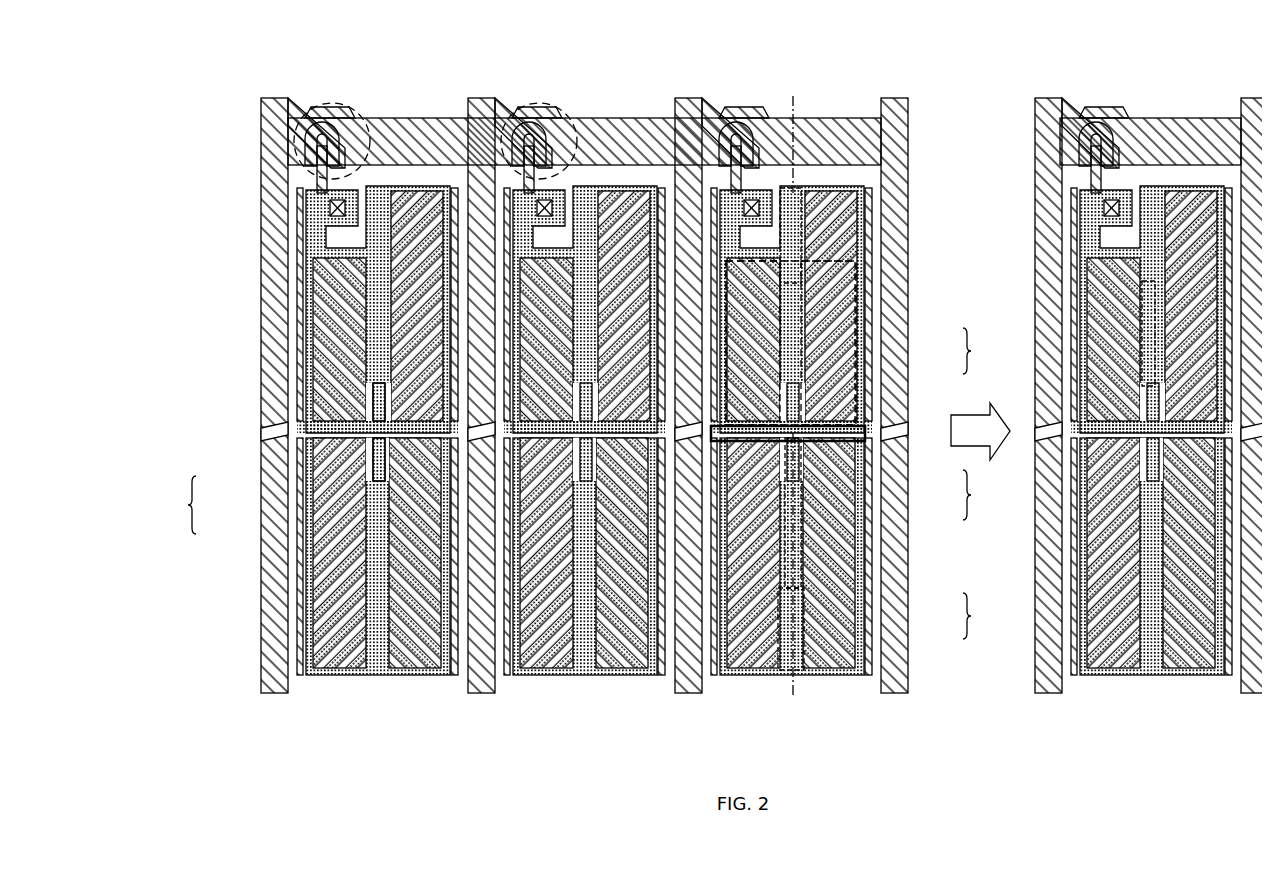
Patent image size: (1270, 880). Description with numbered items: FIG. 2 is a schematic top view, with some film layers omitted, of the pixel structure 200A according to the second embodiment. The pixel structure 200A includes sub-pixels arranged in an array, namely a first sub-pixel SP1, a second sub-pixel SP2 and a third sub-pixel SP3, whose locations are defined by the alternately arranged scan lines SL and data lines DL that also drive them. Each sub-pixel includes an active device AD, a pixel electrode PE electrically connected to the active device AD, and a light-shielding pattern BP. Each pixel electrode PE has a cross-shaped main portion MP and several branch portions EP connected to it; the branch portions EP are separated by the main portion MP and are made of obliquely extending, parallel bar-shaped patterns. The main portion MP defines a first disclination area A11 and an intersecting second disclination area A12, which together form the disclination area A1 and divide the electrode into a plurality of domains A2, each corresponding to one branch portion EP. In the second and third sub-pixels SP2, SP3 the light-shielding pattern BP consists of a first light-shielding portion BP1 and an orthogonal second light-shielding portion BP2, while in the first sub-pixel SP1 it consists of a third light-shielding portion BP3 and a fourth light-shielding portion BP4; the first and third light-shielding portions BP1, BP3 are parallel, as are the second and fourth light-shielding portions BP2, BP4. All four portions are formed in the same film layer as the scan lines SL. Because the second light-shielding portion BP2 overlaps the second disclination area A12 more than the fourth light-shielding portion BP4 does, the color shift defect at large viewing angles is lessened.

The pixel structure 200A is at (713, 401).
The scan line SL is at (430, 125).
The data line DL is at (257, 208).
The active device AD is at (330, 88).
The first sub-pixel SP1 is at (374, 691).
The second sub-pixel SP2 is at (577, 691).
The third sub-pixel SP3 is at (793, 691).
The pixel electrode PE is at (973, 495).
The main portion MP is at (852, 432).
The branch portion EP is at (846, 532).
The light-shielding pattern BP is at (579, 557).
The first light-shielding portion BP1 is at (793, 578).
The second light-shielding portion BP2 is at (796, 640).
The third light-shielding portion BP3 is at (366, 398).
The fourth light-shielding portion BP4 is at (366, 460).
The disclination area A1 is at (860, 343).
The first disclination area A11 is at (858, 393).
The second disclination area A12 is at (838, 350).
The domain A2 is at (722, 703).